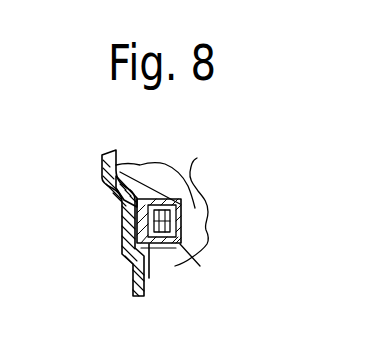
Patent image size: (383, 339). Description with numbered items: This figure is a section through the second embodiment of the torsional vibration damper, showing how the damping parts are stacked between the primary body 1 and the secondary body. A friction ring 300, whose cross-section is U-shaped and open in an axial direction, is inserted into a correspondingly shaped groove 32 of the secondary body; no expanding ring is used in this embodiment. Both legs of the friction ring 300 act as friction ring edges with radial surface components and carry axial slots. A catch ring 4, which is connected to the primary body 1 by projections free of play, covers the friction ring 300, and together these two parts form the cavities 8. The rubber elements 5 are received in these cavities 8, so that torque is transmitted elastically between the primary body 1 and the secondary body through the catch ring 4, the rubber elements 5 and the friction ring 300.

The primary body 1 is at (131, 273).
The catch ring 4 is at (130, 227).
The rubber elements 5 is at (142, 179).
The cavities 8 is at (150, 268).
The groove 32 is at (188, 218).
The friction ring 300 is at (197, 158).